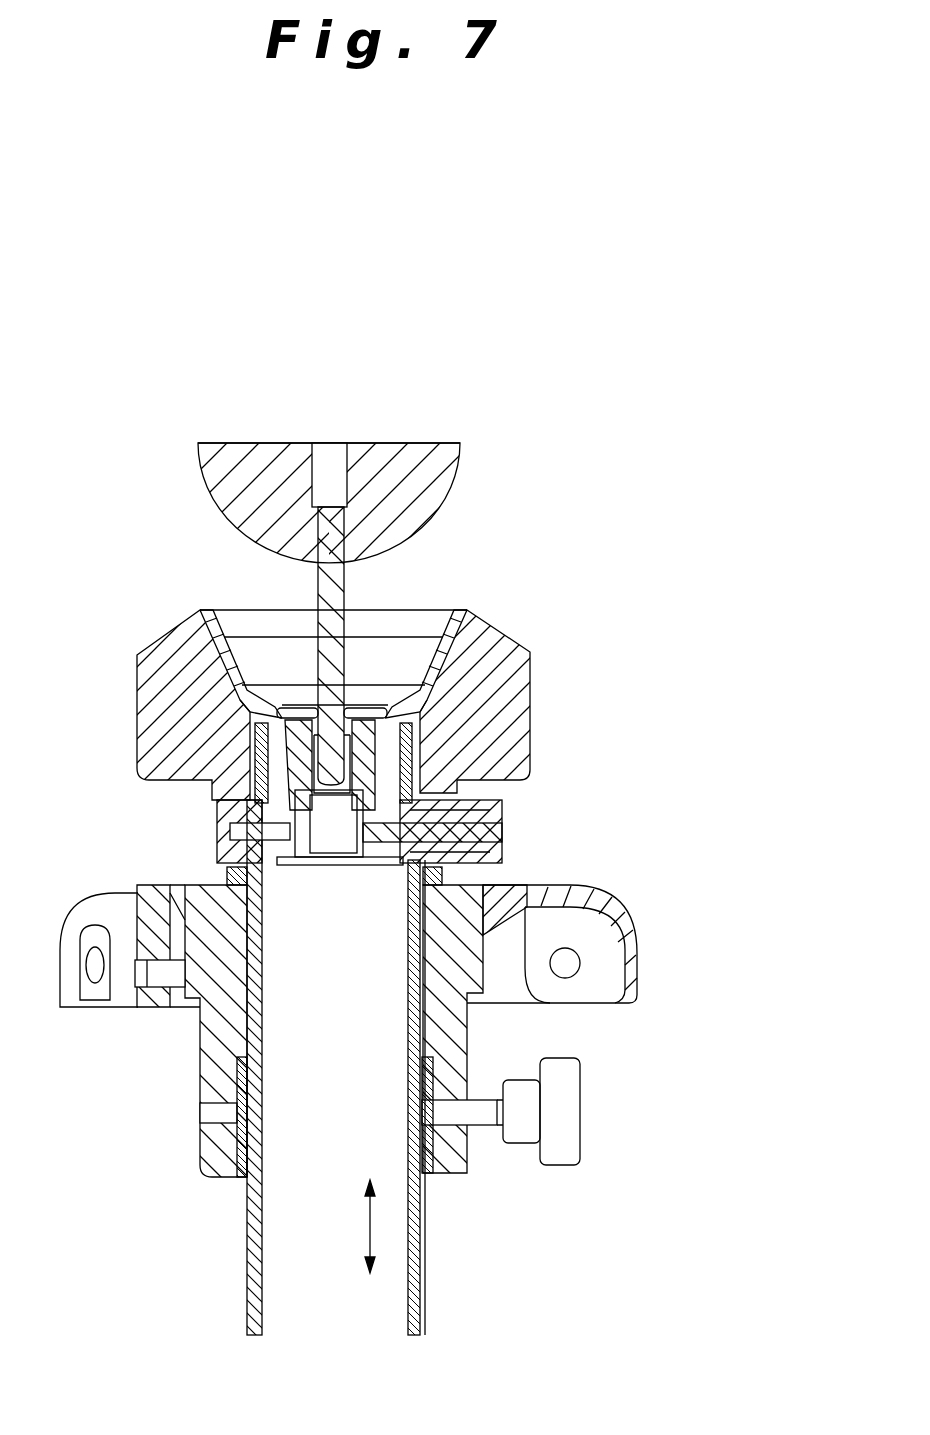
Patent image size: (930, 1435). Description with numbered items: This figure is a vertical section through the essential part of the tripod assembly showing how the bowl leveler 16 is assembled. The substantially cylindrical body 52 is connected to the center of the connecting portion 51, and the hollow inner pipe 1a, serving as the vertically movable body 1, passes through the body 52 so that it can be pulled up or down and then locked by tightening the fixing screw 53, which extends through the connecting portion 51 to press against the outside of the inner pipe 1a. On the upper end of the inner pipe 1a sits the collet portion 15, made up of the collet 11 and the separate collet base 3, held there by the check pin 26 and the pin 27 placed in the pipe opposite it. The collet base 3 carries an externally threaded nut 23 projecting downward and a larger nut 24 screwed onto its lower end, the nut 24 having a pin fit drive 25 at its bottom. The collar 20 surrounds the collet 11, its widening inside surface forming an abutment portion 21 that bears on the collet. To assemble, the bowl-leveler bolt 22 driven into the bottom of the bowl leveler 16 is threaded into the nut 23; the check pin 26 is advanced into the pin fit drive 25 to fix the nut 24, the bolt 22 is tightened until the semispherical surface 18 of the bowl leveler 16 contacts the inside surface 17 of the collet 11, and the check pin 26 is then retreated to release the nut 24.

The bowl leveler 16 is at (405, 458).
The semispherical surface 18 is at (462, 478).
The bowl-leveler bolt 22 is at (346, 588).
The inside surface 17 is at (468, 606).
The abutment portion 21 is at (205, 642).
The collar 20 is at (165, 677).
The collet 11 is at (436, 650).
The collet portion 15 is at (440, 703).
The nut 23 is at (255, 735).
The nut 24 is at (253, 752).
The collet base 3 is at (414, 753).
The pin 27 is at (217, 836).
The check pin 26 is at (497, 830).
The pin fit drive 25 is at (280, 850).
The connecting portion 51 is at (636, 945).
The fixing screw 53 is at (565, 1100).
The body 52 is at (455, 1162).
The vertically movable body 1 is at (425, 1225).
The inner pipe 1a is at (422, 1270).